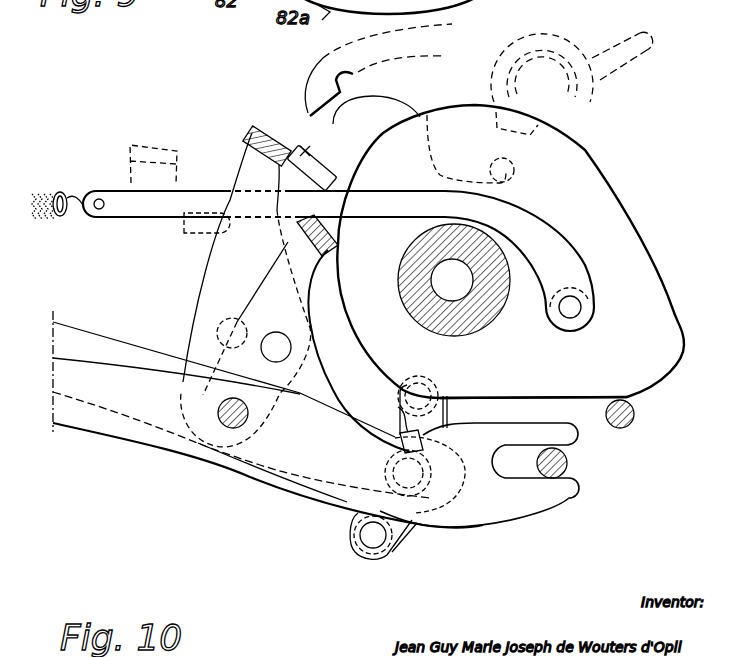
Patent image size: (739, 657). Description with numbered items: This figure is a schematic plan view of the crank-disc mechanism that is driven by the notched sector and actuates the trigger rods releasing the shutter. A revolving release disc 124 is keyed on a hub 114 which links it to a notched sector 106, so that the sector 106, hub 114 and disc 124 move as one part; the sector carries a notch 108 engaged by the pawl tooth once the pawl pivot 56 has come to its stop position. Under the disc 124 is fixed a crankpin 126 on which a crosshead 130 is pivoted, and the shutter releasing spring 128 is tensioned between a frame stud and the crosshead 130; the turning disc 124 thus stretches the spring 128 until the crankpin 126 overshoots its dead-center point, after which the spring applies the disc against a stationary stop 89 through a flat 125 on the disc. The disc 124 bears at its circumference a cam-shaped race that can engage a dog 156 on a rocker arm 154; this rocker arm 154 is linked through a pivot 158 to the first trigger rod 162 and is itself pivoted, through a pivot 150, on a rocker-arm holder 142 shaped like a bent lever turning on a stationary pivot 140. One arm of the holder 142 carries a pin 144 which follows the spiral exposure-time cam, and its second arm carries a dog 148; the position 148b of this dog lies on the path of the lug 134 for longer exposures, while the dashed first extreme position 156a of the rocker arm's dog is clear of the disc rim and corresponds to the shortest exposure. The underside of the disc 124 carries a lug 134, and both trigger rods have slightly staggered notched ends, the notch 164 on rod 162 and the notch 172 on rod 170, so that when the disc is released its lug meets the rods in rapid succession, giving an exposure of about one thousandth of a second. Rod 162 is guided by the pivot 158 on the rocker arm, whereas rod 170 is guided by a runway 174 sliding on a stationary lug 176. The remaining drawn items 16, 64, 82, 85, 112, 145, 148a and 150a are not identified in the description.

The shaft hole 16 is at (439, 279).
The pawl pivot 56 is at (557, 58).
The pawl 64 is at (410, 52).
The pin 82 is at (645, 36).
The pin 85 is at (514, 177).
The stationary stop 89 is at (636, 413).
The notched sector 106 is at (369, 100).
The notch 108 is at (306, 150).
The lug 112 is at (338, 120).
The hub 114 is at (446, 290).
The revolving disc 124 is at (618, 207).
The flat 125 is at (543, 398).
The crankpin 126 is at (574, 306).
The shutter releasing spring 128 is at (67, 194).
The crosshead 130 is at (130, 208).
The lug 134 is at (528, 140).
The stationary pivot 140 is at (228, 418).
The rocker-arm holder 142 is at (235, 319).
The pin 144 is at (413, 482).
The pivot boss 145 is at (388, 557).
The dog 148 is at (270, 128).
The roller position 148a is at (167, 153).
The dog position 148b is at (316, 171).
The pivot 150 is at (279, 334).
The pin position 150a is at (218, 326).
The rocker arm 154 is at (306, 333).
The dog 156 is at (338, 242).
The first extreme dog position 156a is at (203, 237).
The pivot 158 is at (204, 451).
The trigger rod 162 is at (64, 336).
The notched end 164 is at (395, 432).
The trigger rod 170 is at (77, 419).
The notched end 172 is at (424, 428).
The runway 174 is at (504, 476).
The stationary lug 176 is at (567, 463).